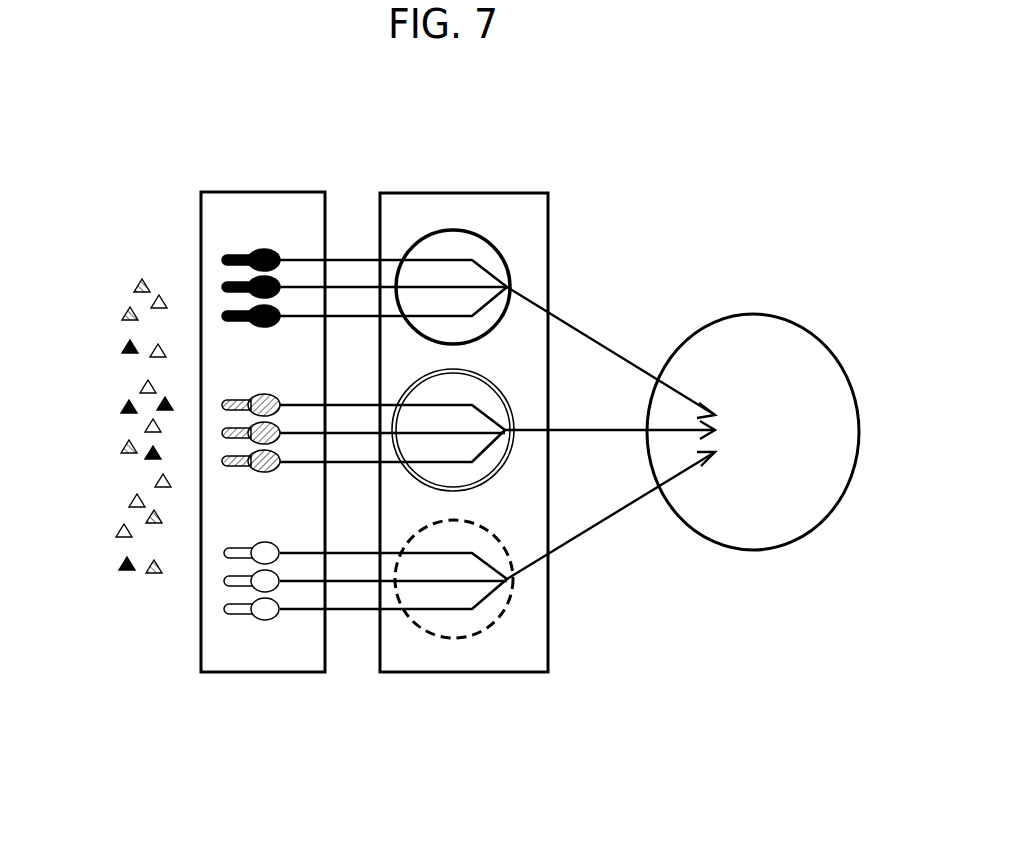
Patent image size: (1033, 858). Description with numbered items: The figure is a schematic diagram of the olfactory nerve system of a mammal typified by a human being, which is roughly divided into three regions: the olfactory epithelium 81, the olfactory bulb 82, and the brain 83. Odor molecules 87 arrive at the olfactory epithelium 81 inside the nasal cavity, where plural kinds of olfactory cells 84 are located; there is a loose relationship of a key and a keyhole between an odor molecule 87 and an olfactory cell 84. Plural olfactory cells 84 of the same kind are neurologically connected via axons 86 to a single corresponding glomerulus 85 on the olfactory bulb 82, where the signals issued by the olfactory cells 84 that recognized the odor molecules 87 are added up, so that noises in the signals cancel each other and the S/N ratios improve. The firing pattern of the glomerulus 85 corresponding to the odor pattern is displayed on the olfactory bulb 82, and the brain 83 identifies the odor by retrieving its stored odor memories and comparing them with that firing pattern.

The olfactory epithelium 81 is at (254, 192).
The olfactory bulb 82 is at (475, 210).
The brain 83 is at (760, 345).
The olfactory cells 84 is at (275, 618).
The glomerulus 85 is at (507, 256).
The axons 86 is at (335, 258).
The odor molecule 87 is at (141, 280).